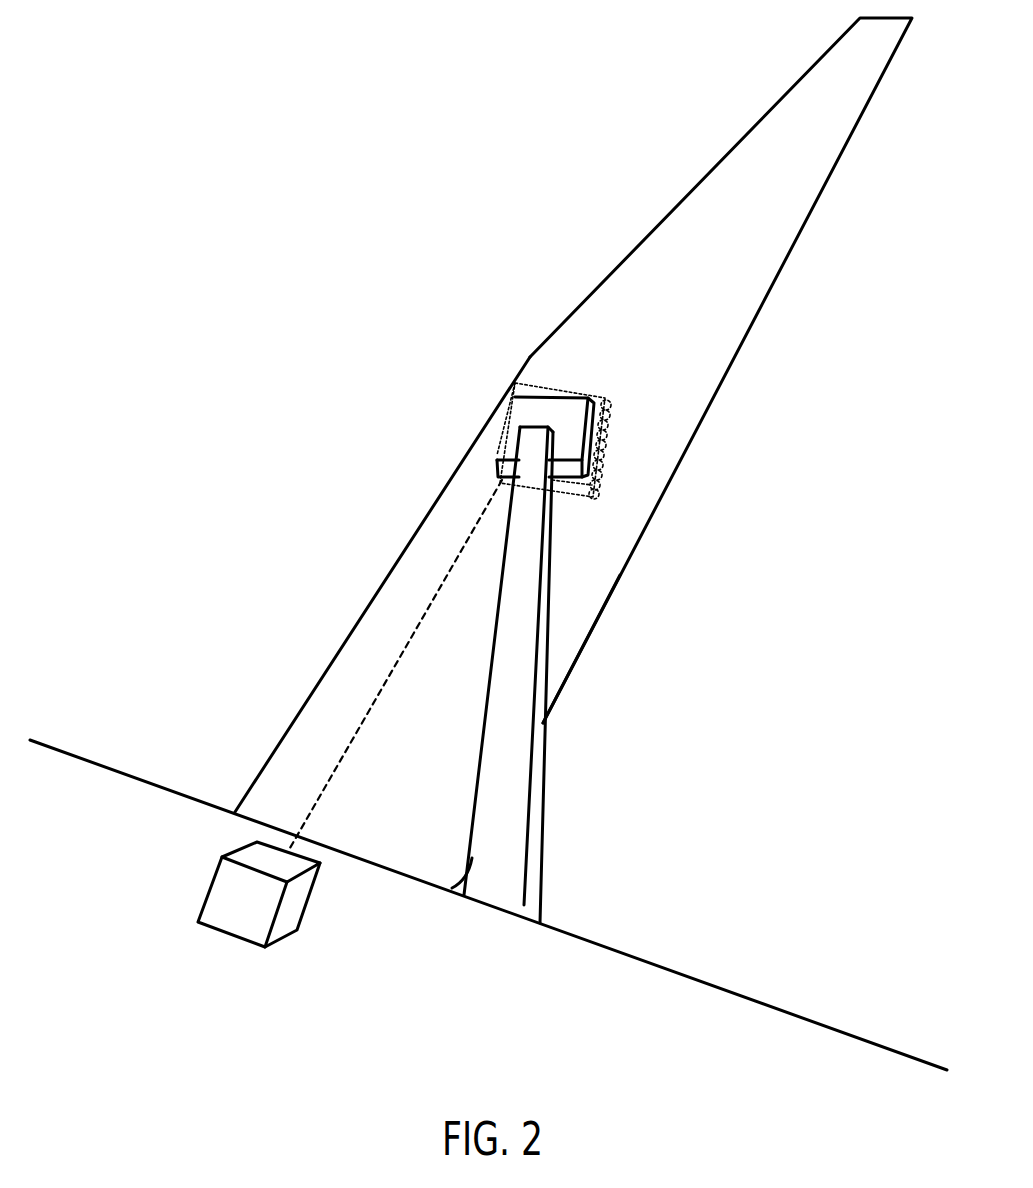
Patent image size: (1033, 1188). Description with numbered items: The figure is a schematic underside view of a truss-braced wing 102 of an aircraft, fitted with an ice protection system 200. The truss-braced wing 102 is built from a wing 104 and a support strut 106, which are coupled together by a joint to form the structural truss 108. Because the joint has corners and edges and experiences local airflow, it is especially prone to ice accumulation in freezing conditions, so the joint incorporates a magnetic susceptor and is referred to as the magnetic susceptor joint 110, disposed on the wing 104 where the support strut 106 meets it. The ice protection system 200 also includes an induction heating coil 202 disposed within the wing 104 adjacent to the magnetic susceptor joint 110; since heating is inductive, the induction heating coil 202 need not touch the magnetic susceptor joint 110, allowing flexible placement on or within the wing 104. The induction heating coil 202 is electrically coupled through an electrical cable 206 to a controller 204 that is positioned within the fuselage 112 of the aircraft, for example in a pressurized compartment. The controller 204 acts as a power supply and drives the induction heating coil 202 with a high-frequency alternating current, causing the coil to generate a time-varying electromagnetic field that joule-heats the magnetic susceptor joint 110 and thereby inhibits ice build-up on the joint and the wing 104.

The truss-braced wing 102 is at (738, 462).
The wing 104 is at (653, 270).
The support strut 106 is at (503, 830).
The structural truss 108 is at (577, 616).
The magnetic susceptor joint 110 is at (508, 405).
The fuselage 112 is at (632, 952).
The ice protection system 200 is at (489, 350).
The induction heating coil 202 is at (565, 387).
The controller 204 is at (238, 907).
The electrical cable 206 is at (393, 673).